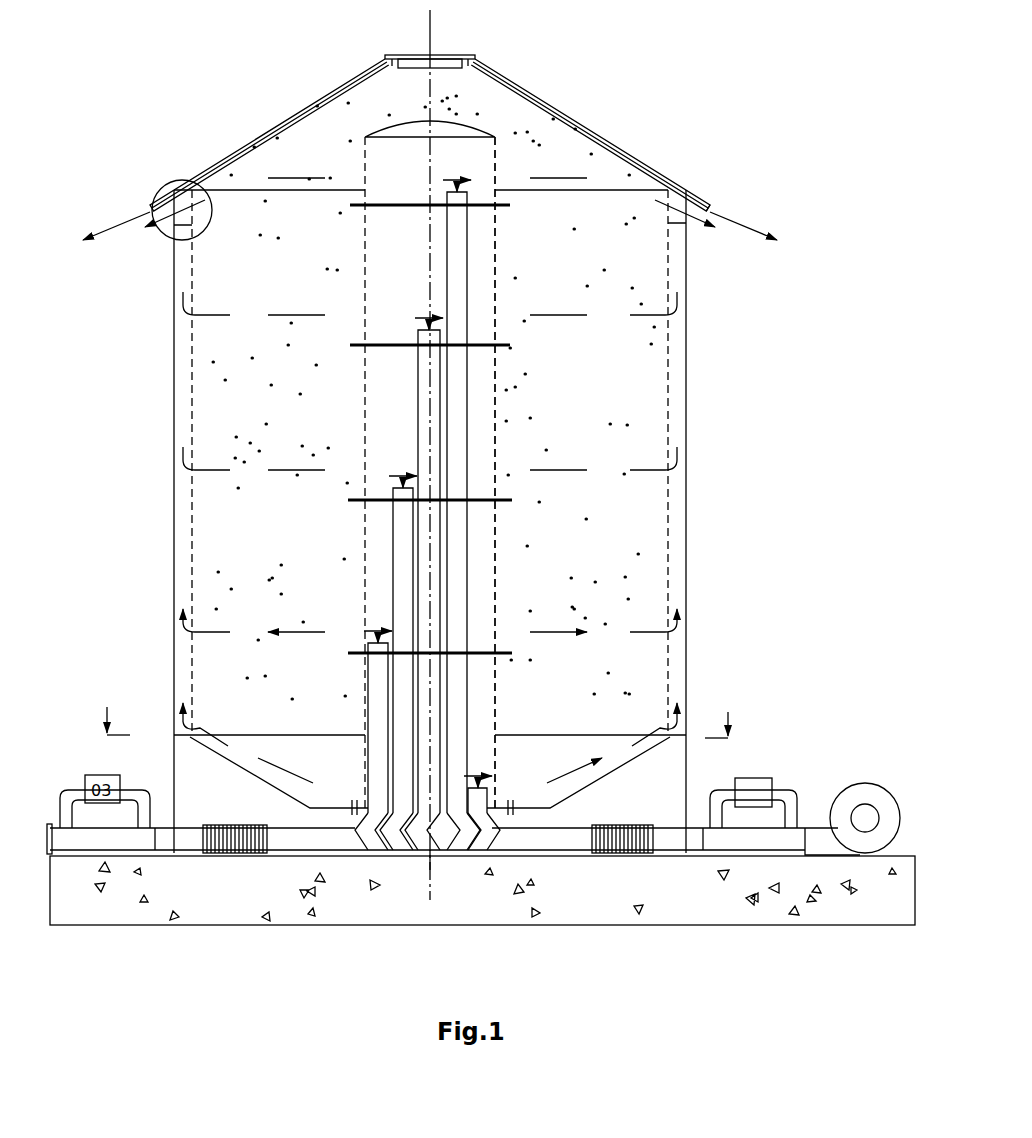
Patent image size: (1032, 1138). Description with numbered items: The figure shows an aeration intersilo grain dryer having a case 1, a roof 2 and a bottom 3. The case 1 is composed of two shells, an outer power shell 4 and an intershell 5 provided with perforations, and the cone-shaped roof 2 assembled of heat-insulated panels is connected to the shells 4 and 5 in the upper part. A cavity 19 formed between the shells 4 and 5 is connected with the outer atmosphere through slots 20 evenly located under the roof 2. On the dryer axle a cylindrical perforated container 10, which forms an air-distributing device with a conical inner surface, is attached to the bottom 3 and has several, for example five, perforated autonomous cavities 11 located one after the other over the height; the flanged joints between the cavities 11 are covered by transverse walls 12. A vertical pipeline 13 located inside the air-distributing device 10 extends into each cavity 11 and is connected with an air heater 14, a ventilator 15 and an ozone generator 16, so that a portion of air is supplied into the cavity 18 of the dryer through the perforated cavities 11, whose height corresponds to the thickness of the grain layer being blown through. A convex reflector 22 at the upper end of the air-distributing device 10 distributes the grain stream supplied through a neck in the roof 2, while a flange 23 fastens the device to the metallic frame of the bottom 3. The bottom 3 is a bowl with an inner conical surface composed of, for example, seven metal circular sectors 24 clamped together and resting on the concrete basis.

The case 1 is at (676, 316).
The roof 2 is at (558, 118).
The bottom 3 is at (145, 663).
The outer power shell 4 is at (686, 273).
The intershell 5 is at (668, 353).
The cylindrical perforated container 10 is at (480, 436).
The perforated autonomous cavities 11 is at (626, 475).
The transverse walls 12 is at (480, 652).
The pipeline 13 is at (378, 720).
The air heater 14 is at (612, 840).
The ventilator 15 is at (872, 792).
The ozone generator 16 is at (752, 780).
The cavity of the dryer 18 is at (608, 673).
The cavity between the shells 19 is at (678, 265).
The slots 20 is at (678, 208).
The reflector 22 is at (470, 125).
The flange 23 is at (512, 806).
The metal circular sectors 24 is at (215, 792).